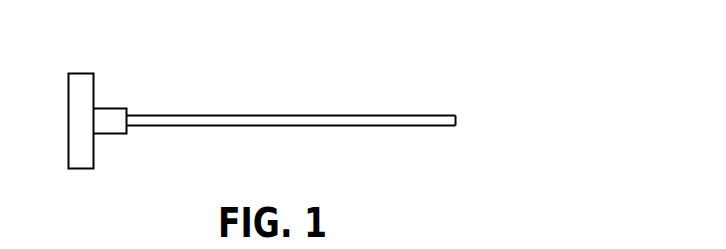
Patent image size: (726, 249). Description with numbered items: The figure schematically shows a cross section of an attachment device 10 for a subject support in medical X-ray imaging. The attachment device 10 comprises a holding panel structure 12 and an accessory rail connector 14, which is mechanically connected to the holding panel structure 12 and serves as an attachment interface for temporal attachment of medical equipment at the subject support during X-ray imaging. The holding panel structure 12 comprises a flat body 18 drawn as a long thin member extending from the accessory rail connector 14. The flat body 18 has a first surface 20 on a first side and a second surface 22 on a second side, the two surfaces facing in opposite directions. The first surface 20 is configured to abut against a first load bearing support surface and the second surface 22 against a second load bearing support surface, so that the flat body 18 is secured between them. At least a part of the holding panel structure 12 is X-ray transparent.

The attachment device 10 is at (446, 63).
The holding panel structure 12 is at (461, 117).
The accessory rail connector 14 is at (96, 84).
The flat body 18 is at (355, 112).
The first surface 20 is at (278, 127).
The second surface 22 is at (305, 115).